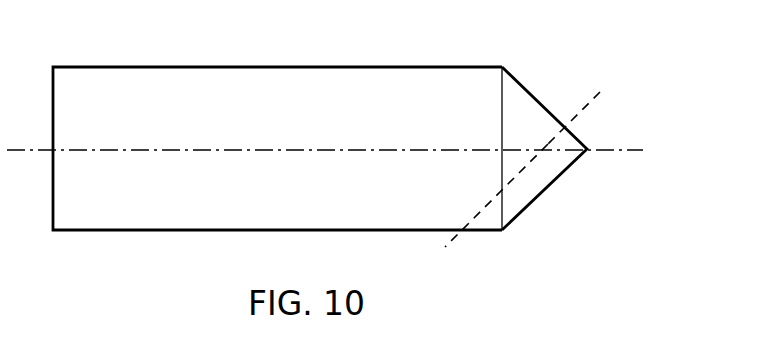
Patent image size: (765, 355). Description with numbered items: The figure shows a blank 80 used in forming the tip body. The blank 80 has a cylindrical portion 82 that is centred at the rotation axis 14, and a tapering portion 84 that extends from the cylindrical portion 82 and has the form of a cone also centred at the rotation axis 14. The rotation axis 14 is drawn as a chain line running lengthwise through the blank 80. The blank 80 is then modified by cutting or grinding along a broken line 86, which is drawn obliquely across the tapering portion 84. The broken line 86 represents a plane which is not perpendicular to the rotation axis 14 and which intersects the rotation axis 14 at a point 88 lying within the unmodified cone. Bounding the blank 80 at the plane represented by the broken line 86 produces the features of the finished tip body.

The blank 80 is at (320, 116).
The cylindrical portion 82 is at (348, 83).
The tapering portion 84 is at (518, 98).
The broken line 86 is at (590, 110).
The point 88 is at (525, 165).
The rotation axis 14 is at (8, 151).